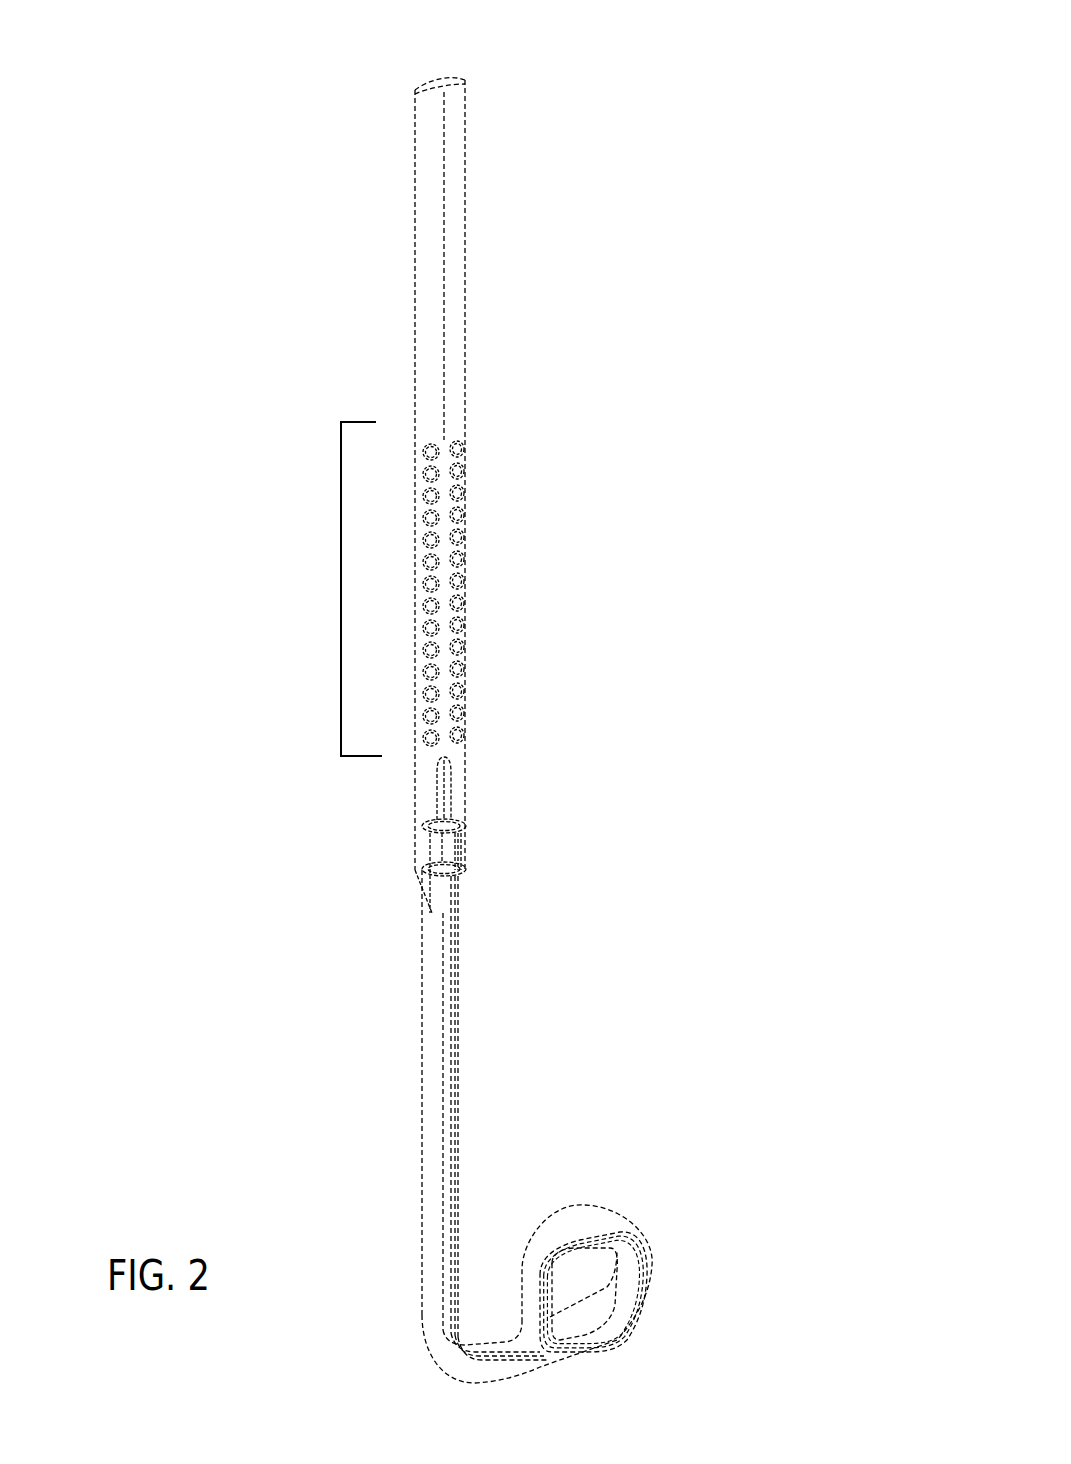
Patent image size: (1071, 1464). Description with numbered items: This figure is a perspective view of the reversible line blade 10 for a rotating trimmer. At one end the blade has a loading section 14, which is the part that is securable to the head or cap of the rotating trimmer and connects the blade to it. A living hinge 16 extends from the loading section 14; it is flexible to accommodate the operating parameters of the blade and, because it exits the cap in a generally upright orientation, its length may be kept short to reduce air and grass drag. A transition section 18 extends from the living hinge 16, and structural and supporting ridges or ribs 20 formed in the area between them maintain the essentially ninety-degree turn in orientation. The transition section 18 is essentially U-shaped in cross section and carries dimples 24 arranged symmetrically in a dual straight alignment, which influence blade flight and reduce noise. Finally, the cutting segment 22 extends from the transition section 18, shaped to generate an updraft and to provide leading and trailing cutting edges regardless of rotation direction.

The reversible line blade 10 is at (722, 176).
The loading section 14 is at (670, 1217).
The living hinge 16 is at (494, 1092).
The transition section 18 is at (320, 527).
The structural and supporting ridges/ribs 20 is at (506, 803).
The cutting segment 22 is at (377, 232).
The dimples 24 is at (431, 540).